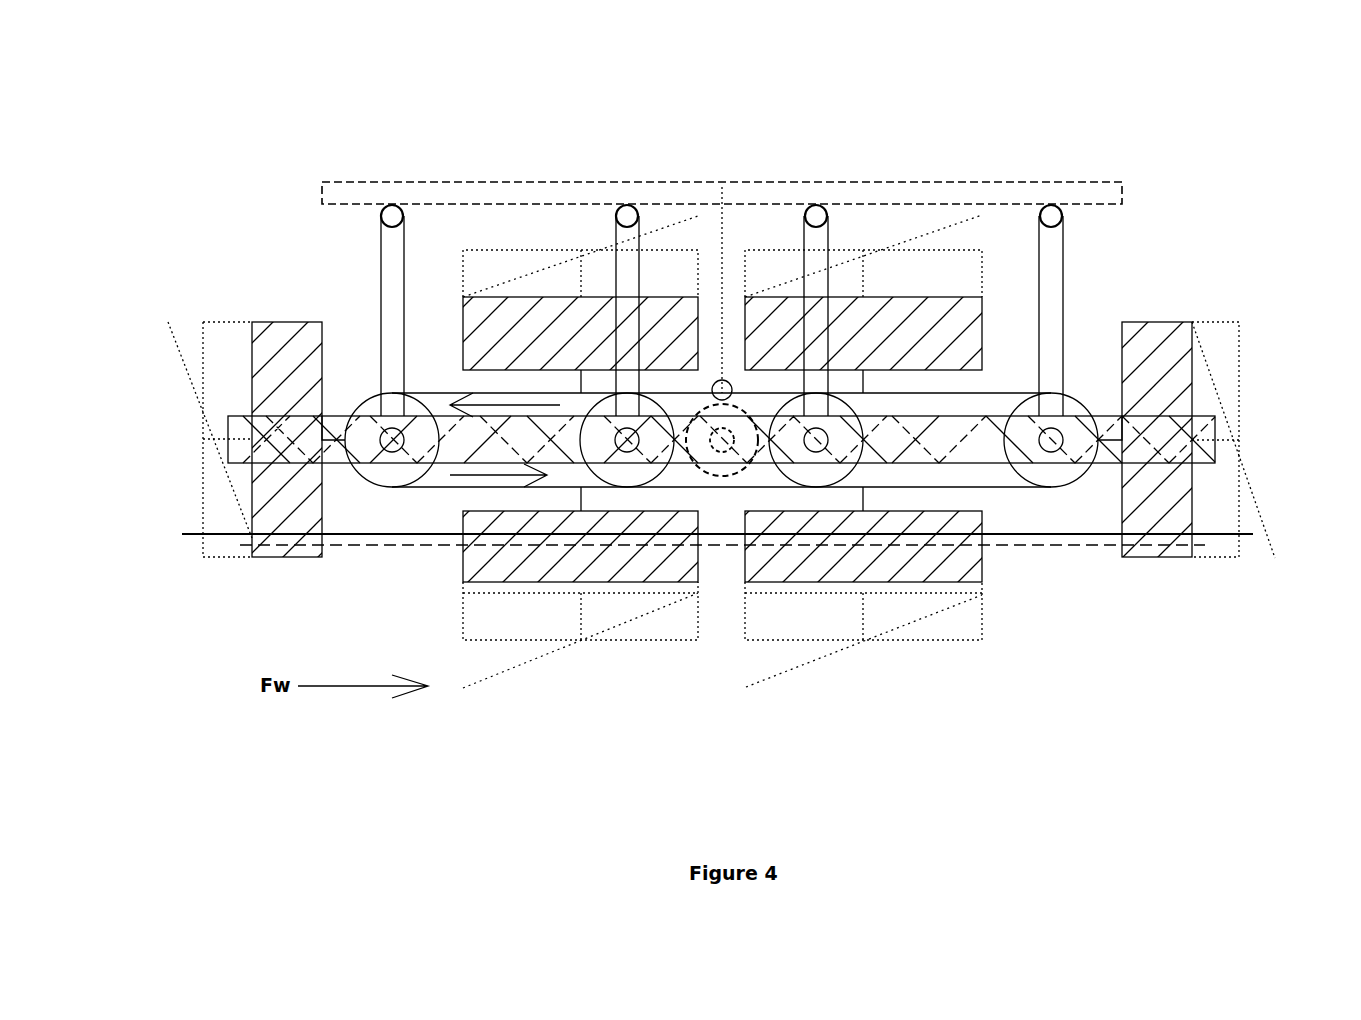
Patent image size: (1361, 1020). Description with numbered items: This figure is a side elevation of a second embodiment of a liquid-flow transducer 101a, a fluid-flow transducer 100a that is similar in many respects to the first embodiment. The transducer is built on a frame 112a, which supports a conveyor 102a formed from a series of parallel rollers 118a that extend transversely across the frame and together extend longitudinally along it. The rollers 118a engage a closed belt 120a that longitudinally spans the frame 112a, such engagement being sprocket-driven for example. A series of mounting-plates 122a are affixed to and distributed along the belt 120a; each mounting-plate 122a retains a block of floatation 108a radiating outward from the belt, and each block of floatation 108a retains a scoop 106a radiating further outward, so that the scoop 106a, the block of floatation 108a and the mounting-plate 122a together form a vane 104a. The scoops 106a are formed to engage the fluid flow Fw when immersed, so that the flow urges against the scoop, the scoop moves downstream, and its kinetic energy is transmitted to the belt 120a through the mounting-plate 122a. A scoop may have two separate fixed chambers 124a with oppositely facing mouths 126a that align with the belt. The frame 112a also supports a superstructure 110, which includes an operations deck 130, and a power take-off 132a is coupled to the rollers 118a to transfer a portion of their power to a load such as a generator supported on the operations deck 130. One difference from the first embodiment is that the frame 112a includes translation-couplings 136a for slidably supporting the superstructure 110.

The conveyor module 100a is at (1177, 119).
The liquid-flow transducer 101a is at (204, 253).
The conveyor 102a is at (447, 370).
The vane 104a is at (1192, 602).
The scoop 106a is at (990, 650).
The block of floatation 108a is at (992, 573).
The superstructure 110 is at (508, 153).
The frame 112a is at (343, 396).
The rollers 118a is at (1074, 384).
The belt 120a is at (438, 493).
The mounting-plate 122a is at (873, 497).
The chambers 124a is at (1222, 500).
The mouths 126a is at (744, 653).
The operations deck 130 is at (321, 180).
The power take-off 132a is at (730, 370).
The translation-couplings 136a is at (377, 216).